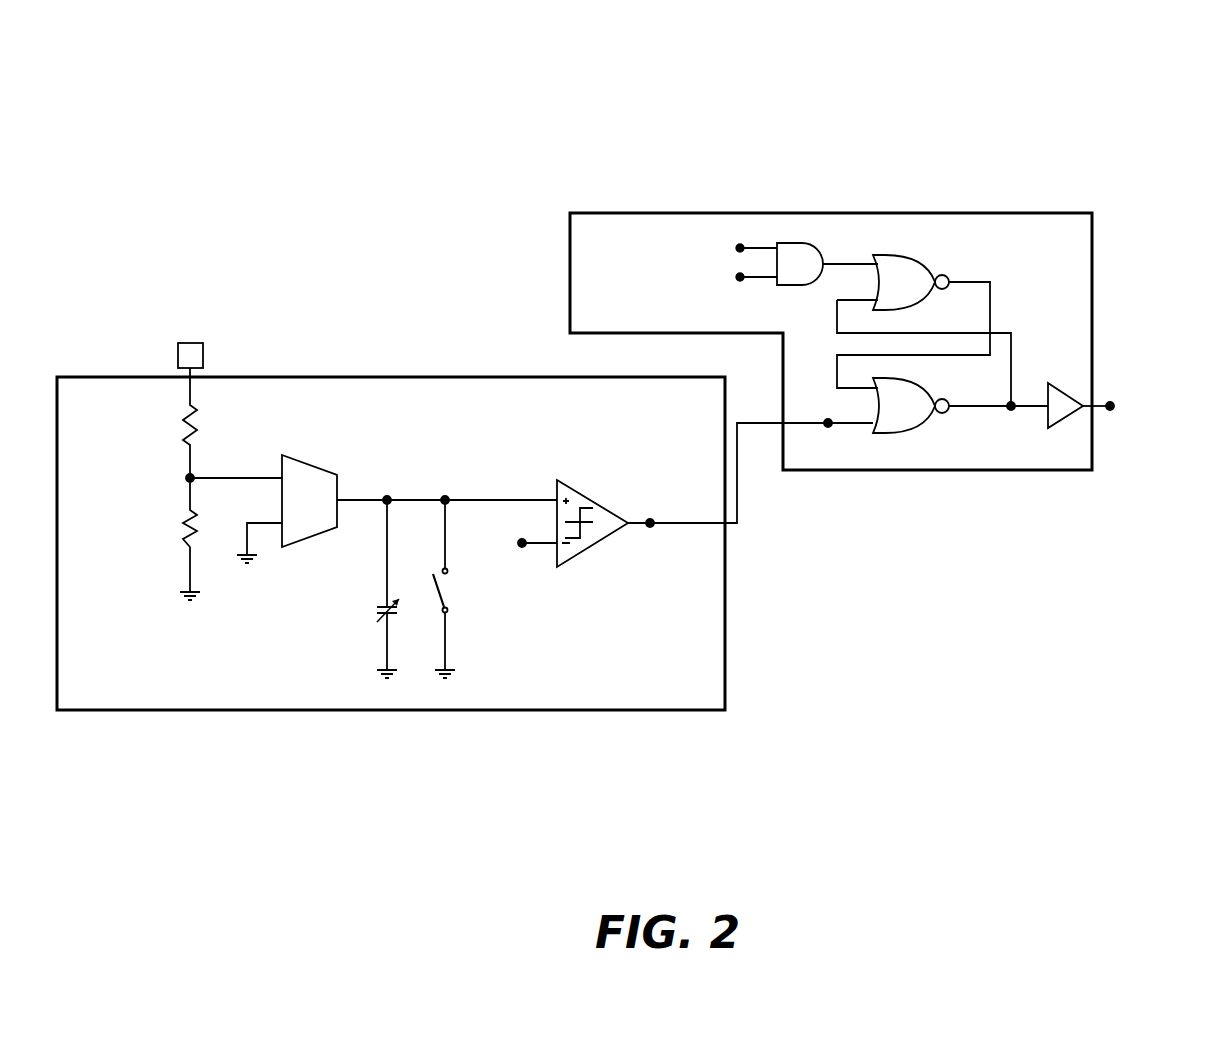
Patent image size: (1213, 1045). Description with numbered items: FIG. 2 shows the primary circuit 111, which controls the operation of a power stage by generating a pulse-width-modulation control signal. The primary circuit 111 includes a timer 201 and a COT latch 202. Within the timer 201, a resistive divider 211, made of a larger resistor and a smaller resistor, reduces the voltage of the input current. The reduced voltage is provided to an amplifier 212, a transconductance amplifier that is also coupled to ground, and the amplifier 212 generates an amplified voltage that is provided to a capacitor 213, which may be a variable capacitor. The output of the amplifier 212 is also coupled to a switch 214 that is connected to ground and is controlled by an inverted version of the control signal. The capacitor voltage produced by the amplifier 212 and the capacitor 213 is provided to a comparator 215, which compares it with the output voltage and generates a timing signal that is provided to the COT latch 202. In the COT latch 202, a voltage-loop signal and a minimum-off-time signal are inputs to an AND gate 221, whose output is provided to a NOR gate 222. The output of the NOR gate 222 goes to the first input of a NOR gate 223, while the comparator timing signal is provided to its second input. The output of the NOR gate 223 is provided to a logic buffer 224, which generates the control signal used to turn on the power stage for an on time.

The primary circuit 111 is at (175, 98).
The timer 201 is at (451, 377).
The COT latch 202 is at (657, 213).
The resistive divider 211 is at (173, 468).
The amplifier 212 is at (297, 457).
The capacitor 213 is at (370, 590).
The switch 214 is at (460, 618).
The comparator 215 is at (575, 480).
The AND gate 221 is at (792, 243).
The NOR gate 222 is at (887, 255).
The NOR gate 223 is at (885, 433).
The logic buffer 224 is at (1073, 408).